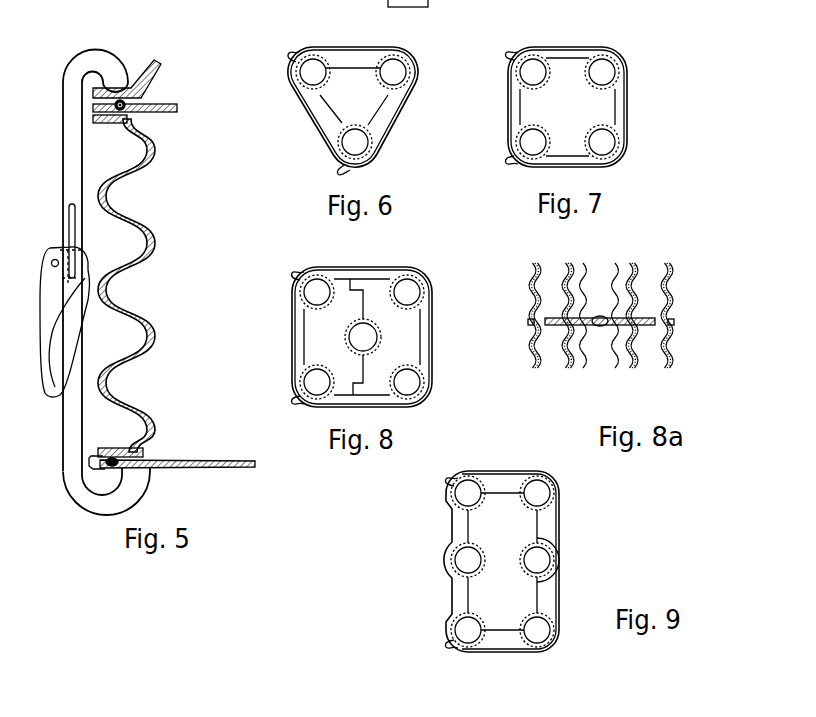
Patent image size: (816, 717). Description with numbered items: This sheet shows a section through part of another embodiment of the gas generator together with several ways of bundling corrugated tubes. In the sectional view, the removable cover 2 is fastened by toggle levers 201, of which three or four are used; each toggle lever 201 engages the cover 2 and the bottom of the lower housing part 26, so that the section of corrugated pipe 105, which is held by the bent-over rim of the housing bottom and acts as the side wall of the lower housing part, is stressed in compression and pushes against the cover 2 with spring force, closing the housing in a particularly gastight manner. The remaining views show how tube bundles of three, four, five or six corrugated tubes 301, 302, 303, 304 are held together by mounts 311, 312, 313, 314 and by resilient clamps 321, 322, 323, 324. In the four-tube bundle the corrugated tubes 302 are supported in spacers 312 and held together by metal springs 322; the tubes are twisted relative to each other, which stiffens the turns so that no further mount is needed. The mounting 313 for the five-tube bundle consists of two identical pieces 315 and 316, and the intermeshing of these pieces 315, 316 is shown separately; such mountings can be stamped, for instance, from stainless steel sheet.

In FIG. 5, the cover 2 is at (160, 50).
In FIG. 5, the bottom of the lower housing part 26 is at (219, 470).
In FIG. 5, the section of corrugated pipe 105 is at (157, 243).
In FIG. 5, the toggle levers 201 is at (70, 188).
In FIG. 6, the corrugated tubes 301 is at (374, 140).
In FIG. 7, the corrugated tubes 302 is at (608, 118).
In FIG. 8, the corrugated tubes 303 is at (423, 383).
In FIG. 8A, the corrugated tubes 303 is at (552, 356).
In FIG. 9, the corrugated tubes 304 is at (545, 605).
In FIG. 6, the mount 311 is at (342, 108).
In FIG. 7, the spacers 312 is at (538, 108).
In FIG. 8, the mounting 313 is at (320, 342).
In FIG. 9, the mount 314 is at (480, 534).
In FIG. 8A, the identical piece 315 is at (657, 316).
In FIG. 8A, the identical piece 316 is at (550, 331).
In FIG. 6, the resilient clamp 321 is at (356, 50).
In FIG. 7, the metal springs 322 is at (566, 91).
In FIG. 8, the resilient clamp 323 is at (375, 268).
In FIG. 8A, the resilient clamp 323 is at (527, 322).
In FIG. 9, the resilient clamp 324 is at (505, 471).